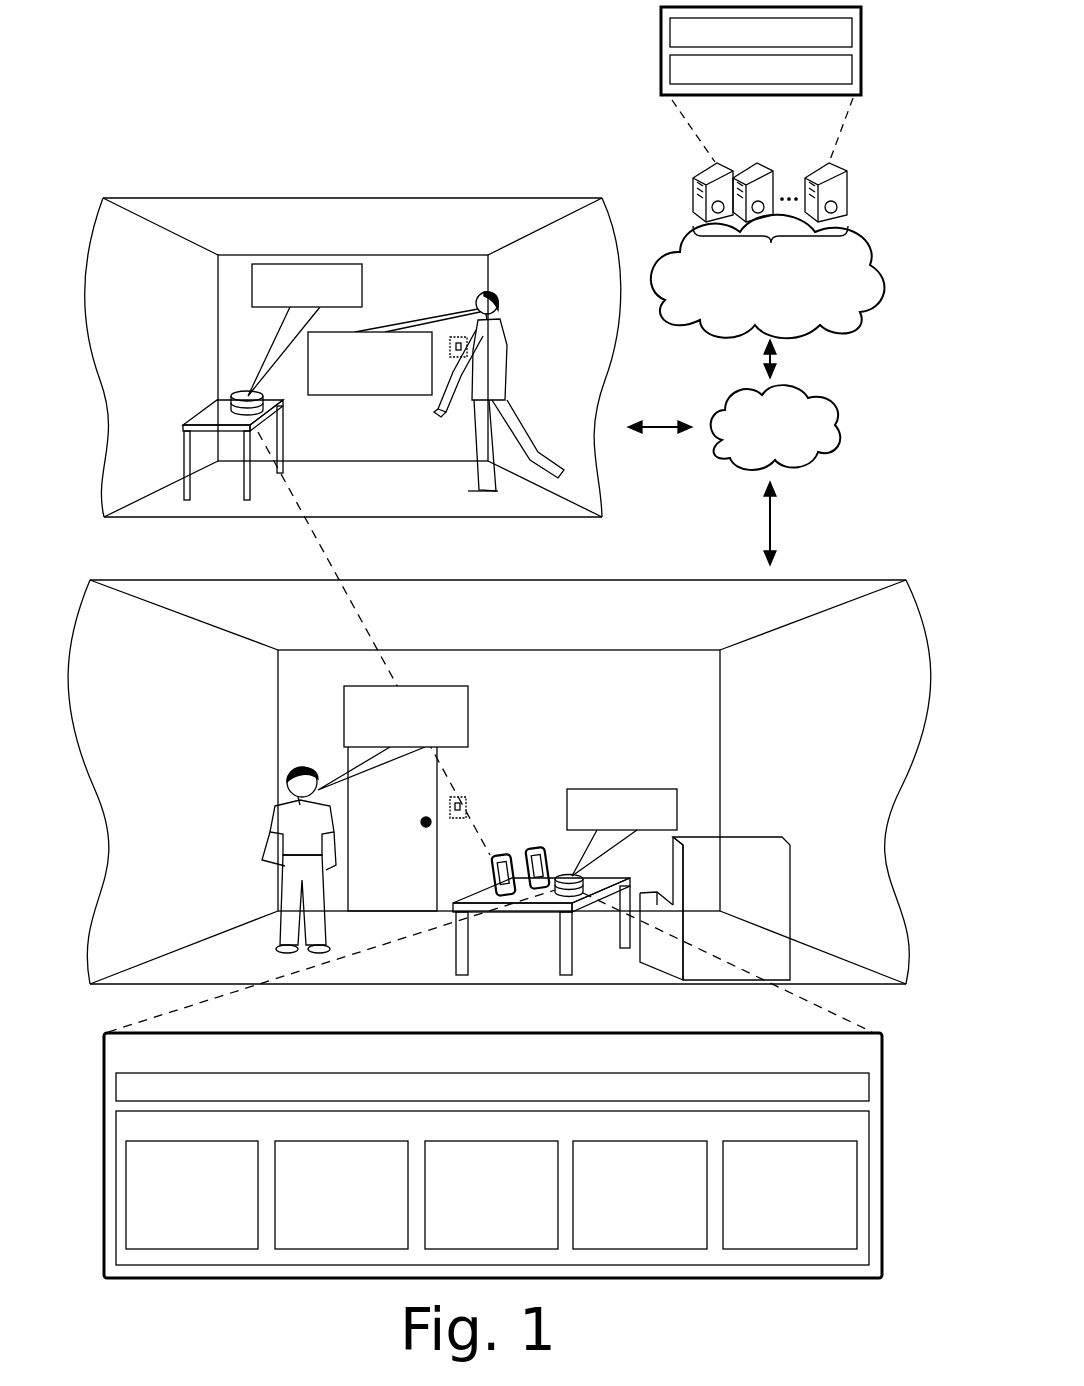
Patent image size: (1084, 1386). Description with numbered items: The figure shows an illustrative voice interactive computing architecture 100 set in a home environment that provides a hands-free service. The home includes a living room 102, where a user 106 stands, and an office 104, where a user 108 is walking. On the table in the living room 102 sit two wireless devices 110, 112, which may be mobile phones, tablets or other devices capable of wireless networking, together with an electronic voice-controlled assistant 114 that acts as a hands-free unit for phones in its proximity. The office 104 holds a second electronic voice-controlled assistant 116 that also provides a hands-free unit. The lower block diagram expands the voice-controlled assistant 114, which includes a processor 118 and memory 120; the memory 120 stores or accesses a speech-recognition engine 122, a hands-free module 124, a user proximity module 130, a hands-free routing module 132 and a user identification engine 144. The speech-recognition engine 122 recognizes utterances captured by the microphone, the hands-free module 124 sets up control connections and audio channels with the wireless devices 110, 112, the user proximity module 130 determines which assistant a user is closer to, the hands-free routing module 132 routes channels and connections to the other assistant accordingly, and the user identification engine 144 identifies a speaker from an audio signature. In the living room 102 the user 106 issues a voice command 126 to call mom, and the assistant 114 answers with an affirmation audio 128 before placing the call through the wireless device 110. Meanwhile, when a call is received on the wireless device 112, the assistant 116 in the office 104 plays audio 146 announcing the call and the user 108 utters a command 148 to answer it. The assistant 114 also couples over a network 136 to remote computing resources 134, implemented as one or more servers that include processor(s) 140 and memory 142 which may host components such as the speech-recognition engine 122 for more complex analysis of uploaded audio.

The voice interactive computing architecture 100 is at (180, 60).
The living room 102 is at (818, 580).
The office 104 is at (211, 197).
The user 106 is at (290, 770).
The user 108 is at (497, 292).
The wireless device 110 is at (546, 848).
The wireless device 112 is at (510, 852).
The electronic voice-controlled assistant 114 is at (493, 1155).
The electronic voice-controlled assistant 116 is at (283, 418).
The processor 118 is at (492, 1087).
The memory 120 is at (492, 1188).
The speech-recognition engine 122 is at (192, 1195).
The hands-free module 124 is at (341, 1195).
The voice command 126 is at (468, 722).
The affirmation audio 128 is at (677, 803).
The user proximity module 130 is at (491, 1195).
The hands-free routing module 132 is at (640, 1195).
The remote computing resources 134 is at (753, 229).
The network 136 is at (776, 427).
The processor(s) 140 is at (761, 32).
The memory 142 is at (761, 69).
The user identification engine 144 is at (790, 1195).
The audio 146 is at (312, 264).
The command 148 is at (385, 395).